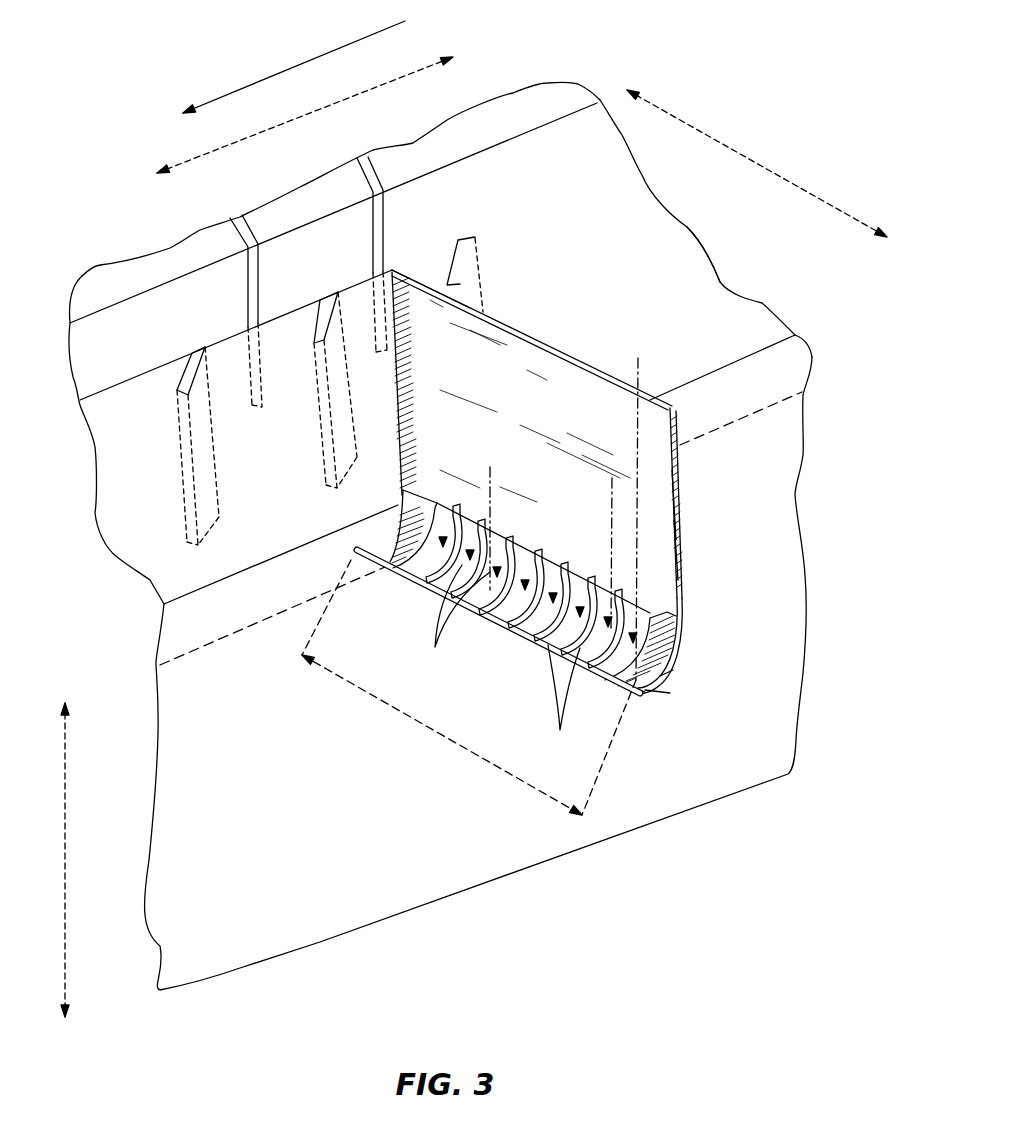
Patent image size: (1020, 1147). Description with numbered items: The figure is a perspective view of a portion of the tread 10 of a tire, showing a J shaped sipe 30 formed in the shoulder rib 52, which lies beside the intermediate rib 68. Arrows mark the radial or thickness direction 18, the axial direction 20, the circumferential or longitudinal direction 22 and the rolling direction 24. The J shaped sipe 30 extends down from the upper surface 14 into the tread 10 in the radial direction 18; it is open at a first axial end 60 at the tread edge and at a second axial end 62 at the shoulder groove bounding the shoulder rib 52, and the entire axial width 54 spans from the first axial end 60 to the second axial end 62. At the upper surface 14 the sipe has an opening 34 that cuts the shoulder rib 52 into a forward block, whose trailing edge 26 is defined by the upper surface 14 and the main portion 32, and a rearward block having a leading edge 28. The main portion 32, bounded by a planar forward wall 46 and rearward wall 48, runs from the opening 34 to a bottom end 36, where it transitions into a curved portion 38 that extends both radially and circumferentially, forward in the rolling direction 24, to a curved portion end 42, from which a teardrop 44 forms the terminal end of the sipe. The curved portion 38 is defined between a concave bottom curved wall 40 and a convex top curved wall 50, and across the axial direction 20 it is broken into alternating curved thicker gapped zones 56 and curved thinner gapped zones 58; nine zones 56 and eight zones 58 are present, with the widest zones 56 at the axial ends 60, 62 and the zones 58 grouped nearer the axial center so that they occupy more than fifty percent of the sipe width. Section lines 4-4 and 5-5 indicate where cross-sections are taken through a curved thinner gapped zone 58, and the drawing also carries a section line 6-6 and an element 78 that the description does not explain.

The tread 10 is at (763, 107).
The upper surface 14 is at (665, 237).
The radial direction 18 is at (66, 860).
The axial direction 20 is at (812, 195).
The circumferential direction 22 is at (305, 117).
The rolling direction 24 is at (295, 68).
The trailing edge 26 is at (405, 270).
The leading edge 28 is at (523, 330).
The J shaped sipe 30 is at (677, 507).
The main portion 32 is at (673, 473).
The opening 34 is at (643, 390).
The bottom end 36 is at (690, 603).
The curved portion 38 is at (677, 650).
The bottom curved wall 40 is at (673, 670).
The curved portion end 42 is at (670, 693).
The teardrop 44 is at (640, 687).
The forward wall 46 is at (553, 373).
The rearward wall 48 is at (677, 410).
The top curved wall 50 is at (680, 630).
The shoulder rib 52 is at (710, 287).
The entire axial width 54 is at (448, 733).
The curved thicker gapped zones 56 is at (387, 532).
The curved thinner gapped zones 58 is at (470, 535).
The first axial end 60 is at (677, 537).
The second axial end 62 is at (397, 430).
The intermediate rib 68 is at (543, 150).
The hanger tab 78 is at (313, 328).
The section line 4- 4 is at (640, 358).
The section line 5- 5 is at (612, 558).
The section line 6- 6 is at (490, 491).